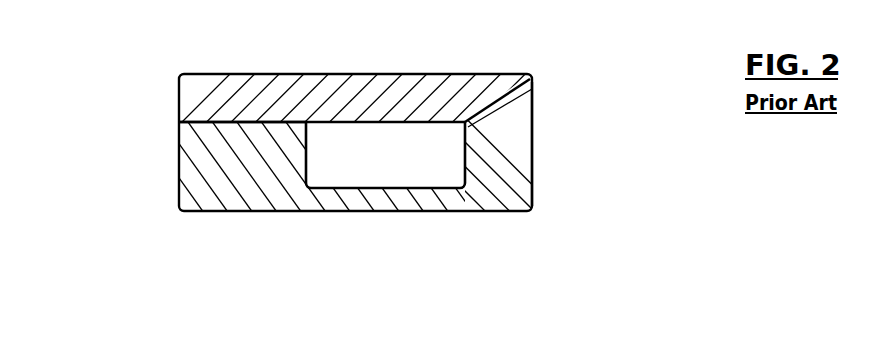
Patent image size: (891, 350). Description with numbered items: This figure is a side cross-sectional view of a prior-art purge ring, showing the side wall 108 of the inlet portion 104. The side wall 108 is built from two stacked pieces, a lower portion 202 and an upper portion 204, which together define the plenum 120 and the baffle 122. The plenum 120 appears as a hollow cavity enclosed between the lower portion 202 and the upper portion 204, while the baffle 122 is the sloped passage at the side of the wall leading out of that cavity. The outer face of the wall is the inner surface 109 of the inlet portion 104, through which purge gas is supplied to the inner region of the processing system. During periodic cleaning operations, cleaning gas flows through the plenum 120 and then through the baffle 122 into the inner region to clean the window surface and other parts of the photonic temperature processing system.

The inlet portion 104 is at (386, 70).
The upper portion 204 is at (247, 73).
The lower portion 202 is at (197, 170).
The plenum 120 is at (384, 160).
The baffle 122 is at (492, 105).
The side wall 108 is at (180, 130).
The inner surface 109 is at (533, 172).